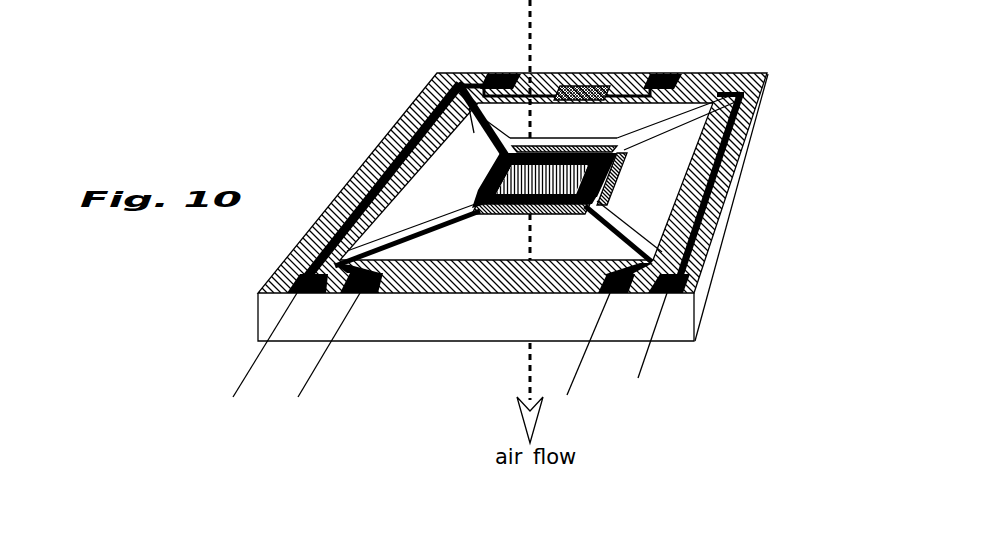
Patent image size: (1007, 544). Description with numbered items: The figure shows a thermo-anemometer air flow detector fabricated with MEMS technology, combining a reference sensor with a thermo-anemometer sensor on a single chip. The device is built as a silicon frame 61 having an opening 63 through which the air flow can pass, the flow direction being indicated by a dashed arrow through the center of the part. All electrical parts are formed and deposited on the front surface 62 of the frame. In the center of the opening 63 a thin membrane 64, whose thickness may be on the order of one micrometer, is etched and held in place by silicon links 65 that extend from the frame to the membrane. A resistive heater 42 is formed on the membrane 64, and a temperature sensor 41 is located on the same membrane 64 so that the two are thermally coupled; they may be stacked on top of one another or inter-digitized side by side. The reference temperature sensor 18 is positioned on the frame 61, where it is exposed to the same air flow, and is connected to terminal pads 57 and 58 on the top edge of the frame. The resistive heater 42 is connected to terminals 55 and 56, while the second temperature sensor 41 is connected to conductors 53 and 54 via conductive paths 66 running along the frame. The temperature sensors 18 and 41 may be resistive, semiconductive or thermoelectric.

The reference temperature sensor 18 is at (568, 85).
The temperature sensor 41 is at (497, 172).
The resistive heater 42 is at (467, 188).
The conductor 53 is at (574, 377).
The conductor 54 is at (640, 372).
The terminal 55 is at (242, 395).
The terminal 56 is at (320, 366).
The terminal pad 57 is at (505, 73).
The terminal pad 58 is at (657, 72).
The silicon frame 61 is at (753, 133).
The front surface 62 is at (760, 73).
The opening 63 is at (643, 192).
The membrane 64 is at (646, 167).
The silicon links 65 is at (597, 232).
The conductive paths 66 is at (698, 247).